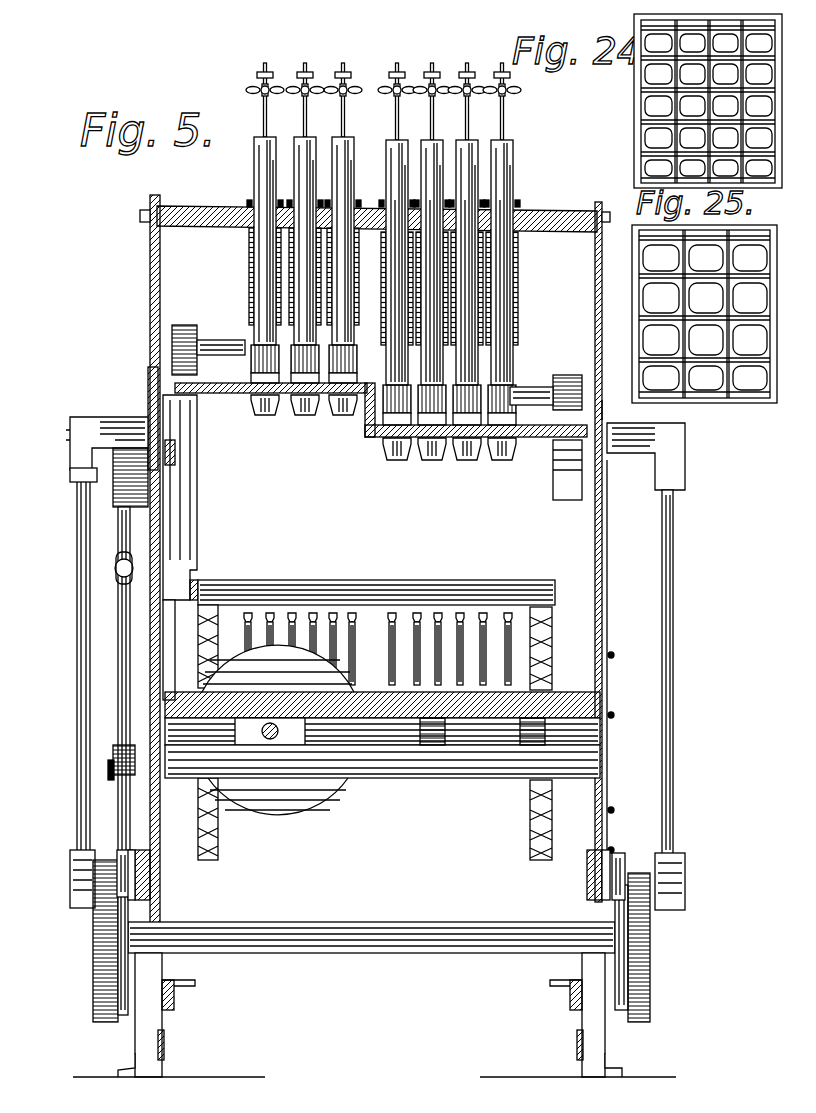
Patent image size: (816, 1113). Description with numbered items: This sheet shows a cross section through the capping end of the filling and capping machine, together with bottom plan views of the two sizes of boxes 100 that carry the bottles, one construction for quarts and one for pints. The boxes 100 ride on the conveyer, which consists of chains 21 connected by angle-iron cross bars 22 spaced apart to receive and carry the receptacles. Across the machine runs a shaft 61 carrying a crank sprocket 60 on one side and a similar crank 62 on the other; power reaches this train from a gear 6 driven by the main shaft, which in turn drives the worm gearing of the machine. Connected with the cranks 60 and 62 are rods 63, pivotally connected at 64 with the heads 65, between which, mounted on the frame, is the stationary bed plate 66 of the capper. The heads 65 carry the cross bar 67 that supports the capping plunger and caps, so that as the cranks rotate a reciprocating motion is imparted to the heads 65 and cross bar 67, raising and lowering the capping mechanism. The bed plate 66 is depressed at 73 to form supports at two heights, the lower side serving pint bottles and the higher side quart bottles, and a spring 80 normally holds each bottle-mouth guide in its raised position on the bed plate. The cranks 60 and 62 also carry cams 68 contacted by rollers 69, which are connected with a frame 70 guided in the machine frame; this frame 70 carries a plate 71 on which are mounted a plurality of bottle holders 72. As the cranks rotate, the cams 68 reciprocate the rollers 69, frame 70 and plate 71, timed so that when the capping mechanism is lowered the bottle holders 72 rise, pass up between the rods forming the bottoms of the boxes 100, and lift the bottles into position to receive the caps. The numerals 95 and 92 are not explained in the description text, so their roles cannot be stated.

In FIG. 5, the cross bar 67 is at (197, 207).
In FIG. 5, the spring 80 is at (252, 290).
In FIG. 5, the gear 95 is at (172, 360).
In FIG. 5, the heads 65 is at (147, 400).
In FIG. 5, the bed plate 66 is at (240, 400).
In FIG. 5, the depression 73 is at (368, 425).
In FIG. 5, the gear 6 is at (603, 408).
In FIG. 5, the pivot 64 is at (68, 430).
In FIG. 5, the rods 63 is at (77, 688).
In FIG. 5, the lever 92 is at (112, 760).
In FIG. 5, the cross bars 22 is at (495, 596).
In FIG. 5, the chains 21 is at (210, 858).
In FIG. 5, the bottle holders 72 is at (318, 612).
In FIG. 5, the plate 71 is at (384, 720).
In FIG. 5, the shaft 61 is at (380, 954).
In FIG. 5, the crank sprocket 60 is at (95, 1012).
In FIG. 5, the cams 68 is at (124, 1018).
In FIG. 5, the crank 62 is at (650, 1002).
In FIG. 5, the rollers 69 is at (124, 852).
In FIG. 5, the frame 70 is at (150, 880).
In FIG. 24, the boxes 100 is at (640, 102).
In FIG. 25, the boxes 100 is at (704, 314).